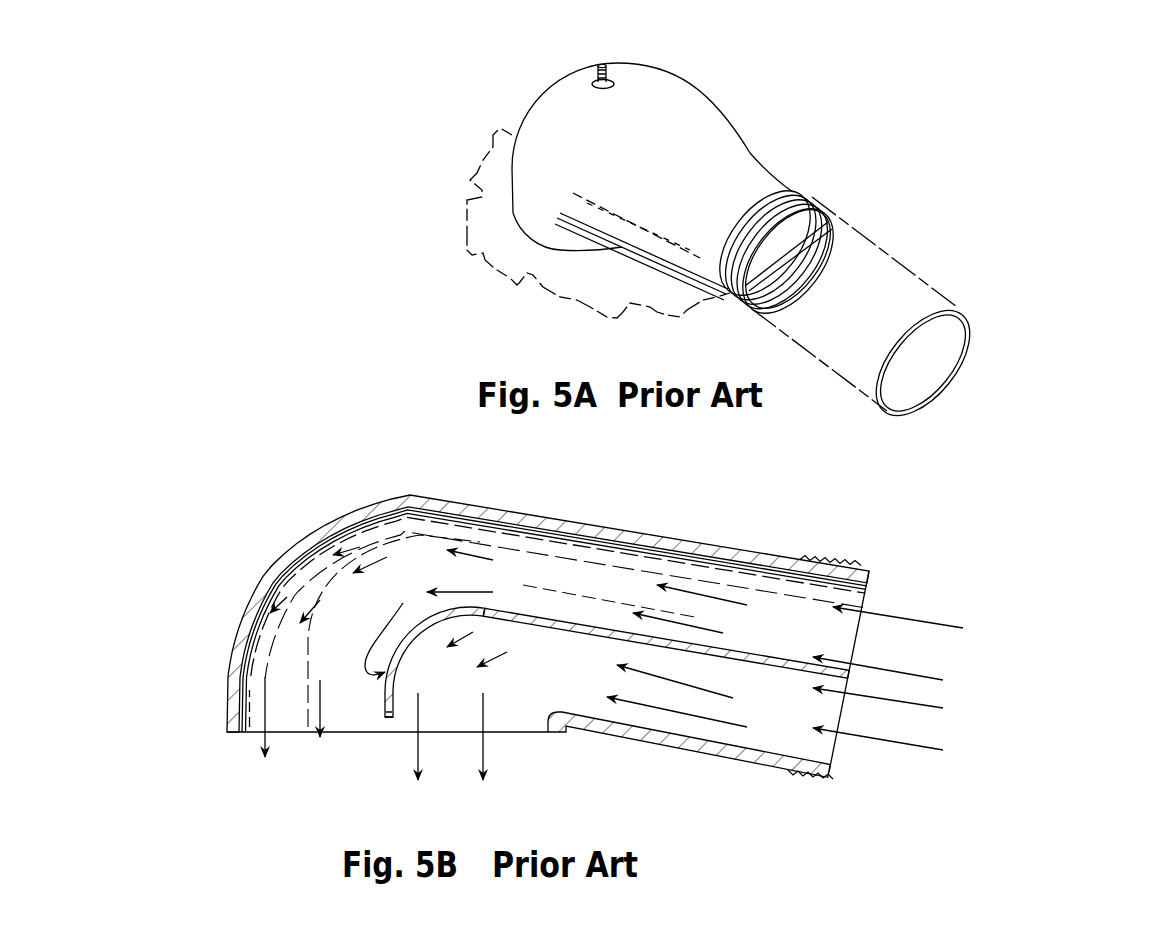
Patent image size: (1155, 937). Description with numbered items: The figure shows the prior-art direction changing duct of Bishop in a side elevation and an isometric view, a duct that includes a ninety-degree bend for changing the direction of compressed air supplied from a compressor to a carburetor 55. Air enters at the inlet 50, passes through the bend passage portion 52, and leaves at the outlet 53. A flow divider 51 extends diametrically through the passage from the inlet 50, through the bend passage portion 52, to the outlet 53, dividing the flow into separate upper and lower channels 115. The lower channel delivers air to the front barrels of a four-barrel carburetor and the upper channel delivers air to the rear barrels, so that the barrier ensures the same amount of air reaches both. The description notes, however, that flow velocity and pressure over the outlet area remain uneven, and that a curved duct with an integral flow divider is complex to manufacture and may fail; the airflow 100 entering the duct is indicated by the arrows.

In FIG. 5B, the inlet 50 is at (835, 757).
In FIG. 5B, the flow divider 51 is at (812, 655).
In FIG. 5B, the bend passage portion 52 is at (430, 627).
In FIG. 5B, the outlet 53 is at (383, 713).
In FIG. 5A, the carburetor 55 is at (512, 233).
In FIG. 5B, the airflow 100 is at (965, 680).
In FIG. 5B, the upper and lower channels 115 is at (530, 727).